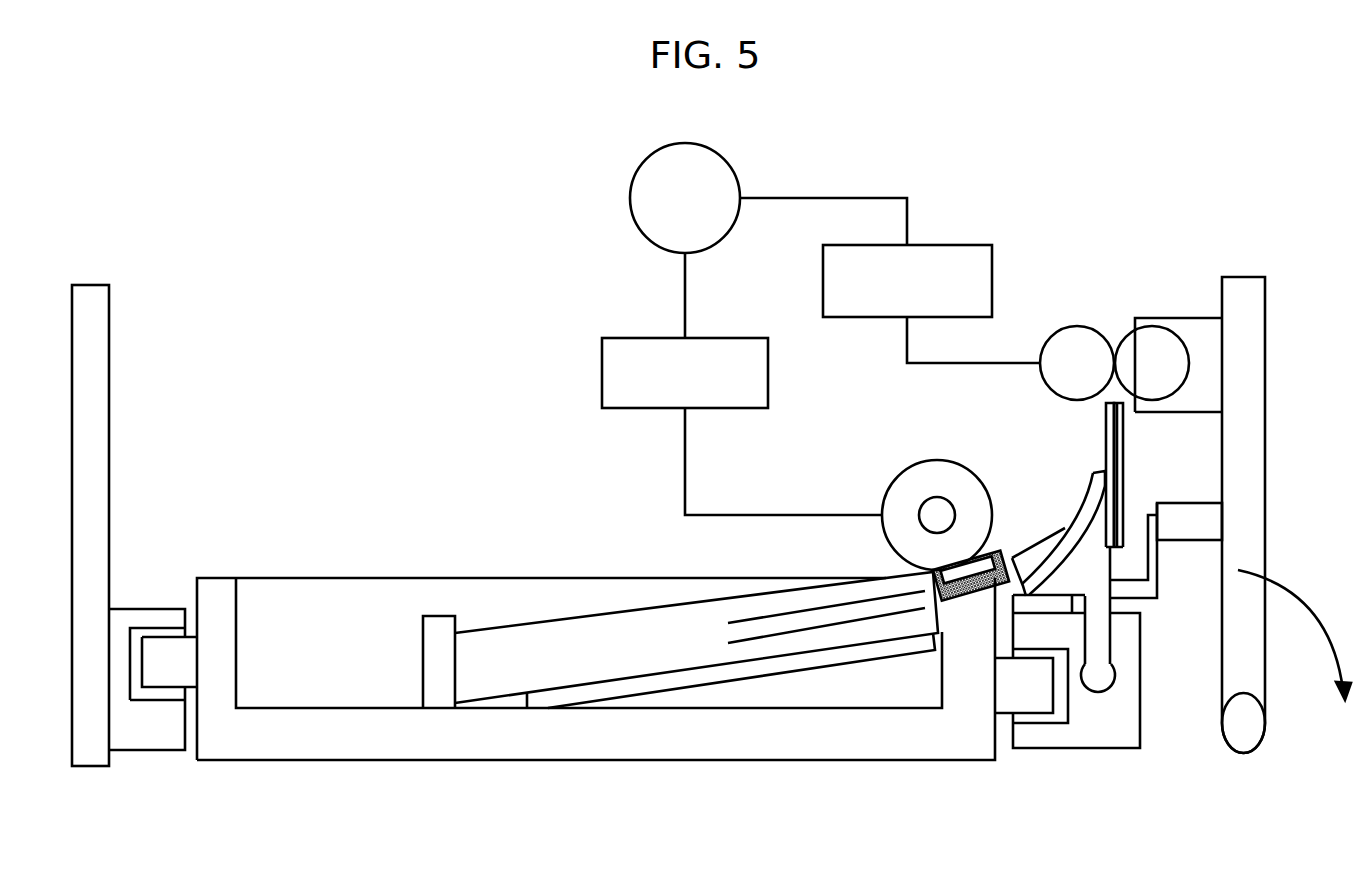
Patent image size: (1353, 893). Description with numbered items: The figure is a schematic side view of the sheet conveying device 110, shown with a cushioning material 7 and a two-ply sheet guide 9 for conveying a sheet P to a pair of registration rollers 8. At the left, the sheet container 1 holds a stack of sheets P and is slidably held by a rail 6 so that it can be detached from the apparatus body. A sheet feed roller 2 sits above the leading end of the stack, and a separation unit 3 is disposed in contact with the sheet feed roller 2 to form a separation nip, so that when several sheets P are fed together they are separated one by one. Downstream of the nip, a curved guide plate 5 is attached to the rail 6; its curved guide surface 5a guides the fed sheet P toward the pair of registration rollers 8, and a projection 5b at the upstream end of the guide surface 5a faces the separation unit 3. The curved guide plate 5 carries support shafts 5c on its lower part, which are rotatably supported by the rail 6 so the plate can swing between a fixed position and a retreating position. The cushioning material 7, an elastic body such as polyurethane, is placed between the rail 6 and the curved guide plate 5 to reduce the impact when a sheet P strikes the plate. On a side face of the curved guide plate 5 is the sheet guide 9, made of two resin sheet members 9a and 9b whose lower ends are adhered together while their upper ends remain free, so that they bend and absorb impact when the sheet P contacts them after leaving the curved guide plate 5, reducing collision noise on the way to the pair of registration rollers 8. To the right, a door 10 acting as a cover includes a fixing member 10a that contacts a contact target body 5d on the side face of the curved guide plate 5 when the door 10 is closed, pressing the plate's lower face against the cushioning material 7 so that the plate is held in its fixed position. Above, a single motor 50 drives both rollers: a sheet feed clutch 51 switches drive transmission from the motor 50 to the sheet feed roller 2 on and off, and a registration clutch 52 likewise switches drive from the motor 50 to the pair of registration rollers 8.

The sheet container 1 is at (197, 585).
The sheet P is at (533, 627).
The sheet feed roller 2 is at (928, 462).
The separation unit 3 is at (992, 547).
The curved guide plate 5 is at (1106, 575).
The guide surface 5a is at (1086, 484).
The projection 5b is at (1052, 530).
The support shaft 5c is at (1118, 681).
The contact target body 5d is at (1150, 600).
The rail 6 is at (1038, 750).
The cushioning material 7 is at (1060, 594).
The pair of registration rollers 8 is at (1132, 330).
The sheet guide 9 is at (1115, 475).
The sheet member 9a is at (1104, 420).
The sheet member 9b is at (1127, 469).
The door 10 is at (1246, 542).
The fixing member 10a is at (1178, 541).
The motor 50 is at (682, 145).
The sheet feed clutch 51 is at (741, 338).
The registration clutch 52 is at (961, 245).
The sheet conveying device 110 is at (1188, 751).